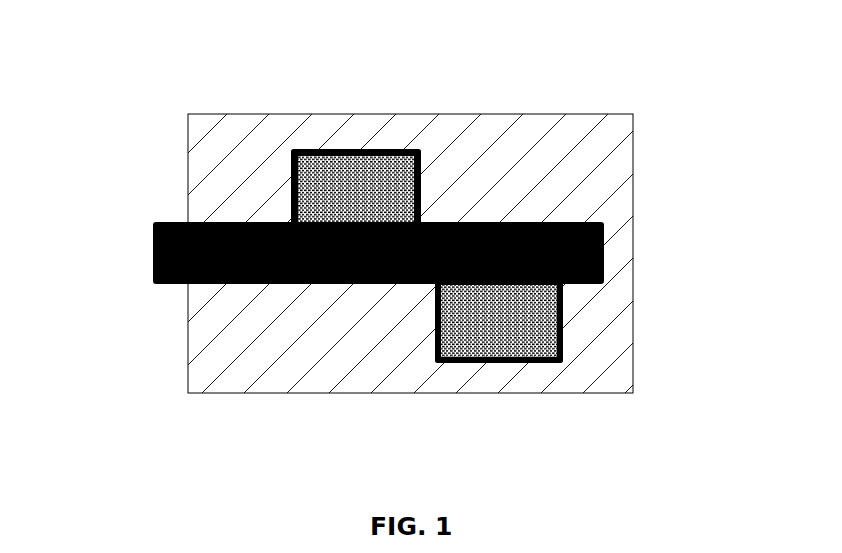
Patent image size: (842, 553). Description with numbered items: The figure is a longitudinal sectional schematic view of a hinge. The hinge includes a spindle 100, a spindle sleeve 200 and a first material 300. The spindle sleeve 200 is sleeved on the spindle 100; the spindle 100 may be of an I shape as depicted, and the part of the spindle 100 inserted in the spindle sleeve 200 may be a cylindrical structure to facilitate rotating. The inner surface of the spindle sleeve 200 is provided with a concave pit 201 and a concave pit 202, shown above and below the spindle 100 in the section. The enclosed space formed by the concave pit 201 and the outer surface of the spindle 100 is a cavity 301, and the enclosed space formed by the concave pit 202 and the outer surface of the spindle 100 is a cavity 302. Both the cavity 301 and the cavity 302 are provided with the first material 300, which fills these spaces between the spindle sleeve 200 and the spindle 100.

The spindle 100 is at (158, 221).
The spindle sleeve 200 is at (227, 113).
The concave pit 201 is at (323, 150).
The concave pit 202 is at (563, 313).
The first material 300 is at (443, 234).
The cavity 301 is at (375, 177).
The cavity 302 is at (497, 345).